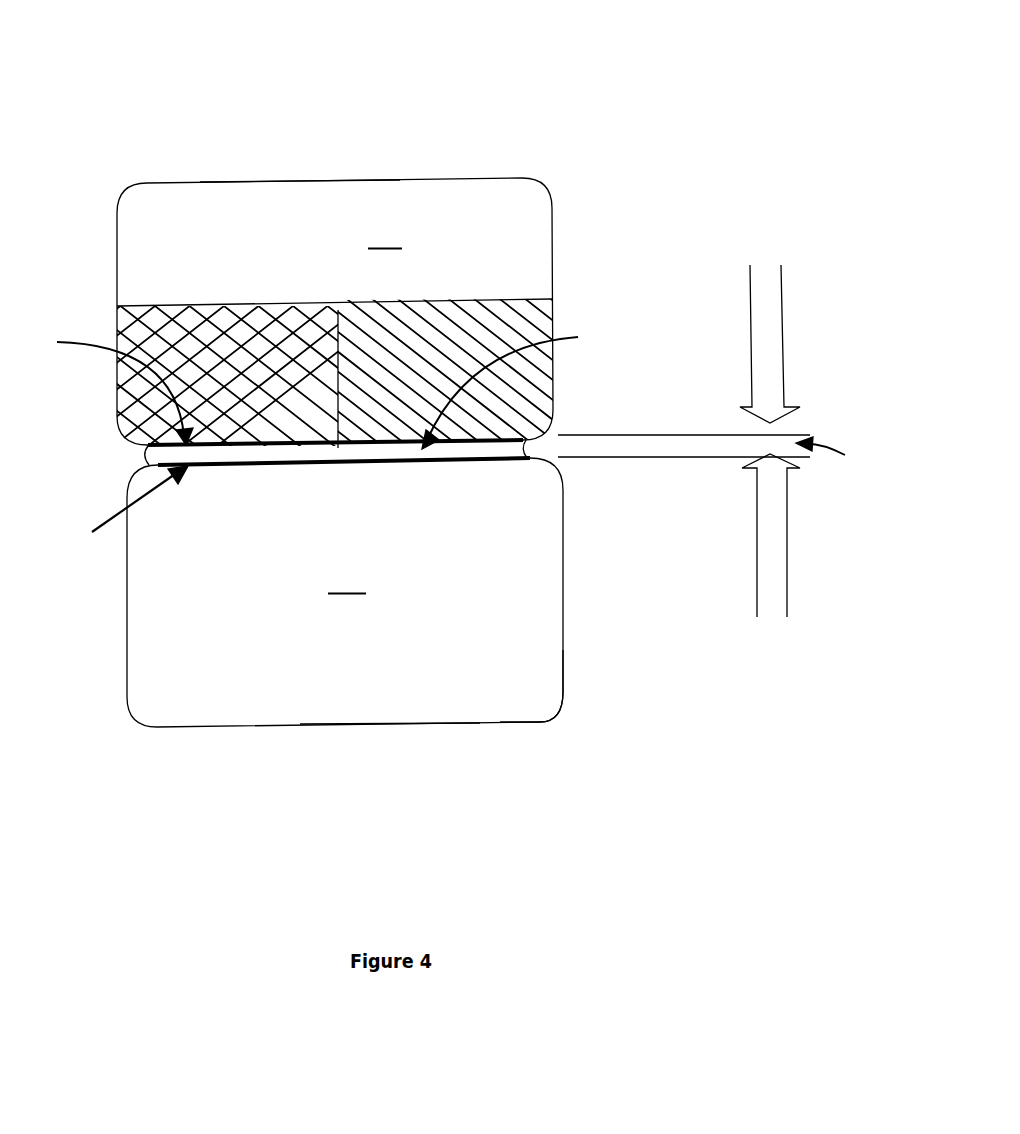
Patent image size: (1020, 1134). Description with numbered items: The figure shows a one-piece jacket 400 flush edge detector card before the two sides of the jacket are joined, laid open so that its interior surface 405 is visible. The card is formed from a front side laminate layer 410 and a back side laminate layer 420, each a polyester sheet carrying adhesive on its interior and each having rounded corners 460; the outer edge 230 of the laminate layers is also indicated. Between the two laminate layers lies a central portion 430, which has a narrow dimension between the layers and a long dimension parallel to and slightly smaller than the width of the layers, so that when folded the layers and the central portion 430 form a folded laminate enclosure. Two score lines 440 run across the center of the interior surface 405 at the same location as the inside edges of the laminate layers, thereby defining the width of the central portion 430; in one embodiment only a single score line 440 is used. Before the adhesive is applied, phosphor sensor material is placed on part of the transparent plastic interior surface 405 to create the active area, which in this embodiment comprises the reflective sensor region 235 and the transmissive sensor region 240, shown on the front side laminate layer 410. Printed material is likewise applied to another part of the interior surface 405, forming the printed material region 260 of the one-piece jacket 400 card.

The one-piece jacket 400 is at (620, 108).
The front side laminate layer 410 is at (505, 248).
The back side laminate layer 420 is at (157, 647).
The card edge 230 is at (305, 182).
The printed material region 260 is at (153, 213).
The interior surface 405 is at (365, 410).
The reflective sensor region 235 is at (133, 327).
The transmissive sensor region 240 is at (533, 322).
The central portion 430 is at (522, 387).
The score lines 440 is at (104, 443).
The rounded corners 460 is at (562, 705).